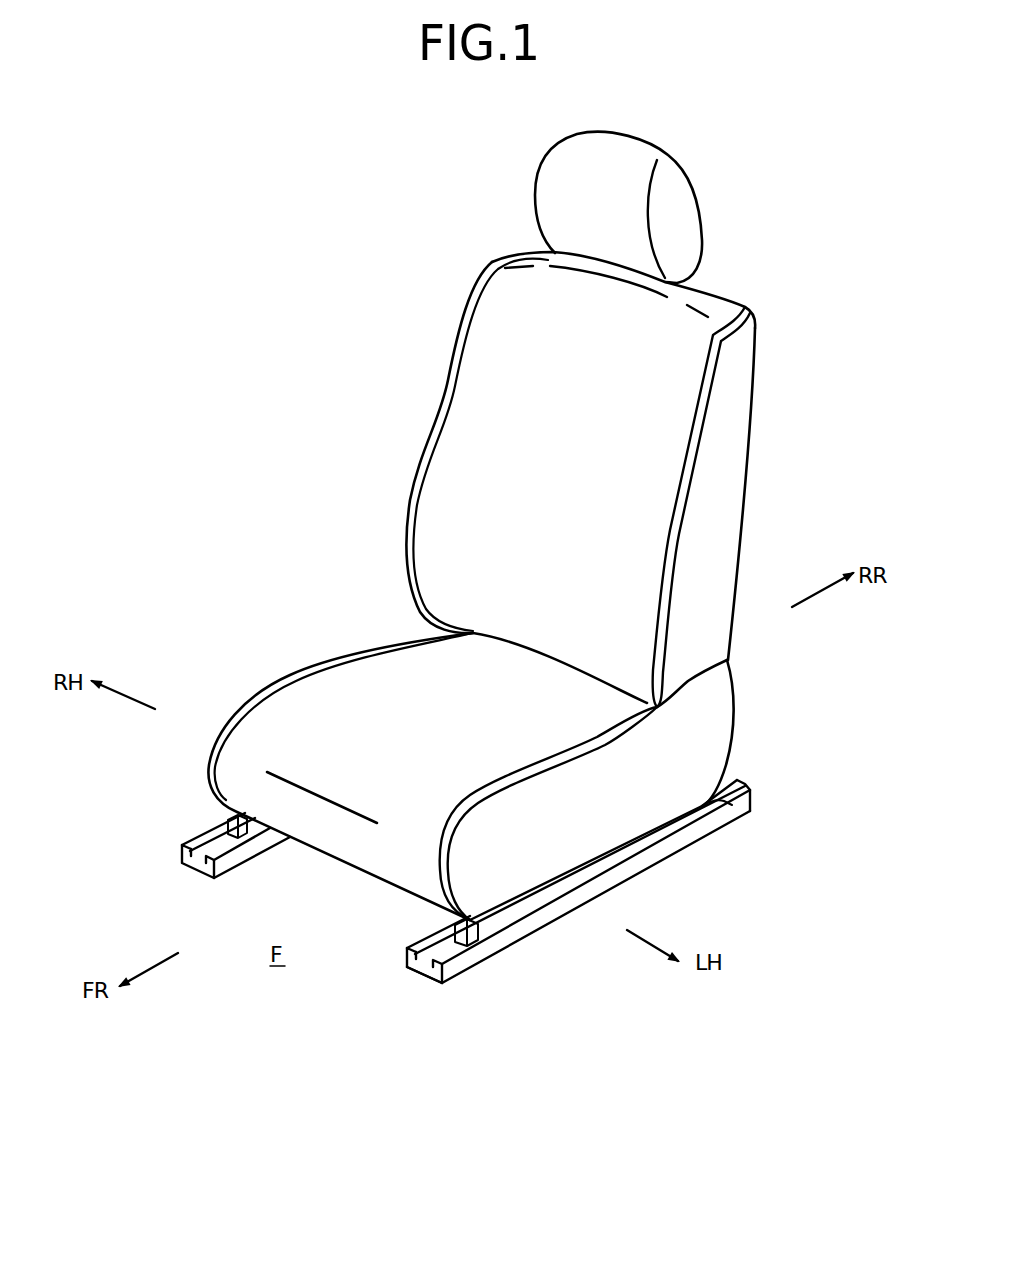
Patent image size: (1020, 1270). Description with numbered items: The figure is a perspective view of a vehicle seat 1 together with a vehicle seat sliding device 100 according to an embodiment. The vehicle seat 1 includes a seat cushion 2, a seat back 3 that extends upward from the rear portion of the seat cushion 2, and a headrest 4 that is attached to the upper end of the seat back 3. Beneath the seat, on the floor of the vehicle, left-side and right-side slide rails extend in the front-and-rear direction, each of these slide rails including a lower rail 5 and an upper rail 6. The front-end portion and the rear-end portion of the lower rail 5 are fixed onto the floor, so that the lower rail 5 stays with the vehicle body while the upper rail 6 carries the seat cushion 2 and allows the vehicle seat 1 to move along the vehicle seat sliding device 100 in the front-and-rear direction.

The vehicle seat 1 is at (780, 382).
The seat cushion 2 is at (358, 720).
The seat back 3 is at (727, 508).
The headrest 4 is at (675, 198).
The lower rail 5 is at (723, 813).
The upper rail 6 is at (730, 772).
The vehicle seat sliding device 100 is at (483, 962).